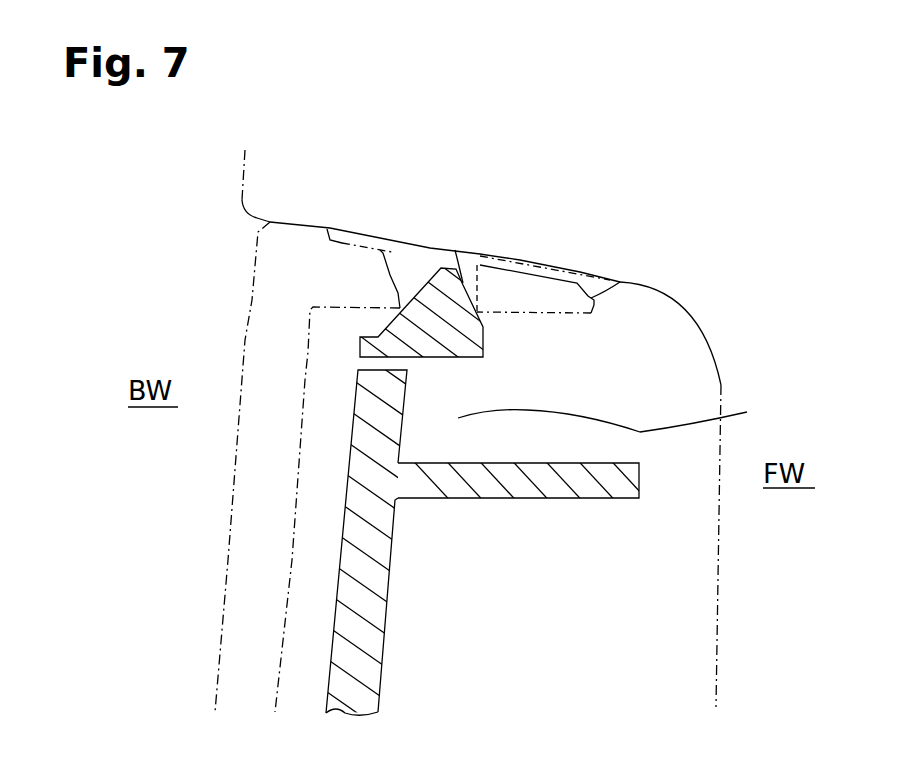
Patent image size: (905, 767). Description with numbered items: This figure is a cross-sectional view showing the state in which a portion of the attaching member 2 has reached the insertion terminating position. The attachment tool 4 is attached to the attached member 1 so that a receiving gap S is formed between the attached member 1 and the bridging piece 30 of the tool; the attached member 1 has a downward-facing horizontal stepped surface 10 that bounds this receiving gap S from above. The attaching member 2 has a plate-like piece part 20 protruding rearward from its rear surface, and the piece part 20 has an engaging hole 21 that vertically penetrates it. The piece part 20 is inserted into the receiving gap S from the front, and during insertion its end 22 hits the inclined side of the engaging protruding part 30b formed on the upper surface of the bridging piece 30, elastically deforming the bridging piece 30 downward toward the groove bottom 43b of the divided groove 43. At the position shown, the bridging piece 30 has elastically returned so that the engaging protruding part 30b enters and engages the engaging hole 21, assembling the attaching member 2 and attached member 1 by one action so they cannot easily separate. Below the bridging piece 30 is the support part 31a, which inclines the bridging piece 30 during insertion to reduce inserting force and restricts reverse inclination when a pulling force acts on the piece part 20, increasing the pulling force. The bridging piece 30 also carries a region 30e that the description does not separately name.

The attached member 1 is at (753, 248).
The attaching member 2 is at (200, 467).
The attachment tool 4 is at (382, 655).
The downward-facing horizontal stepped surface 10 is at (480, 218).
The piece part 20 is at (357, 183).
The engaging hole 21 is at (348, 426).
The end of the piece part 22 is at (567, 264).
The bridging piece 30 is at (365, 304).
The engaging protruding part 30b is at (463, 295).
The weather strip lower end 30e is at (510, 369).
The support part 31a is at (362, 400).
The divided groove 43 is at (622, 408).
The groove bottom 43b is at (460, 450).
The receiving gap S is at (444, 180).